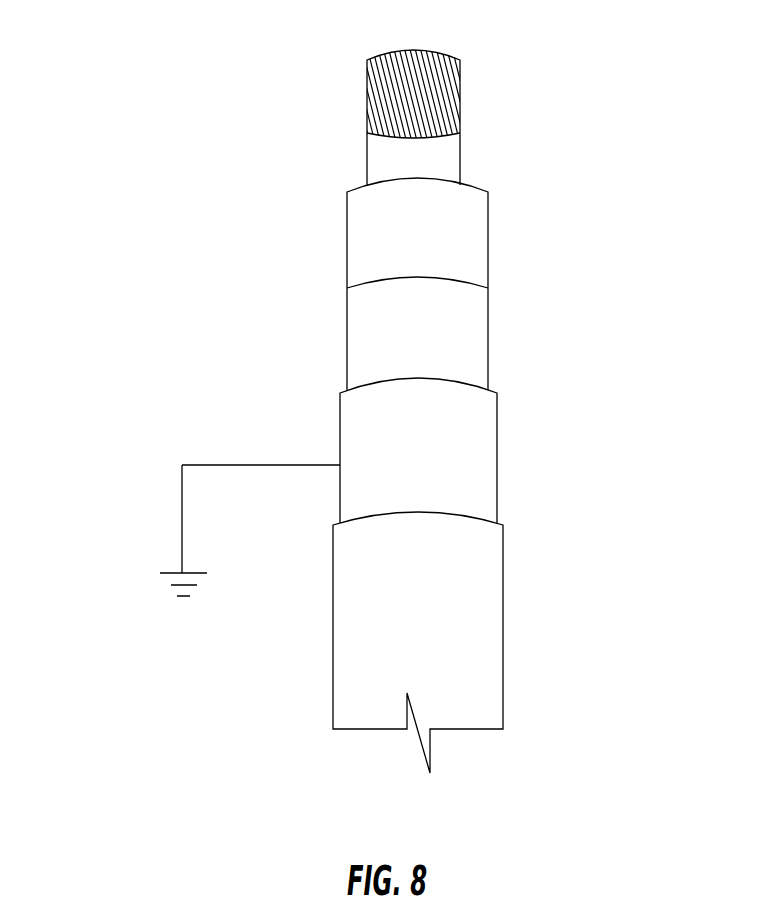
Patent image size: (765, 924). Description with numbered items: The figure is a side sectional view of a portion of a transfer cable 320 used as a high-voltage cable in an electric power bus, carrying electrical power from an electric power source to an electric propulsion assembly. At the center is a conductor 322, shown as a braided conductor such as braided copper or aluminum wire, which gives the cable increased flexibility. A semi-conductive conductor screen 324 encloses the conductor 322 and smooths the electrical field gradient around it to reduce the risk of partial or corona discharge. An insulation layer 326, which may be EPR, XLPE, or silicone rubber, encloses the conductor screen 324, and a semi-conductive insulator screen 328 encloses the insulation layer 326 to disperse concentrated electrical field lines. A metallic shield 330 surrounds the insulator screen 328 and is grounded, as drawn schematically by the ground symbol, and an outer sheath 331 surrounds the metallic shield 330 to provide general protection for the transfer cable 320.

The transfer cable 320 is at (150, 165).
The conductor 322 is at (457, 87).
The conductor screen 324 is at (447, 157).
The insulation layer 326 is at (470, 242).
The insulator screen 328 is at (363, 322).
The metallic shield 330 is at (475, 468).
The outer sheath 331 is at (490, 627).